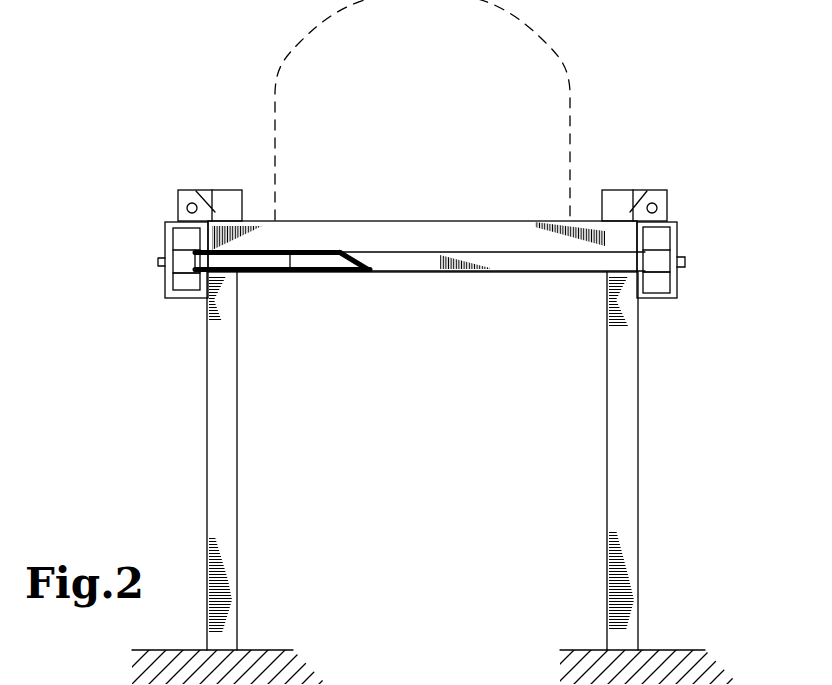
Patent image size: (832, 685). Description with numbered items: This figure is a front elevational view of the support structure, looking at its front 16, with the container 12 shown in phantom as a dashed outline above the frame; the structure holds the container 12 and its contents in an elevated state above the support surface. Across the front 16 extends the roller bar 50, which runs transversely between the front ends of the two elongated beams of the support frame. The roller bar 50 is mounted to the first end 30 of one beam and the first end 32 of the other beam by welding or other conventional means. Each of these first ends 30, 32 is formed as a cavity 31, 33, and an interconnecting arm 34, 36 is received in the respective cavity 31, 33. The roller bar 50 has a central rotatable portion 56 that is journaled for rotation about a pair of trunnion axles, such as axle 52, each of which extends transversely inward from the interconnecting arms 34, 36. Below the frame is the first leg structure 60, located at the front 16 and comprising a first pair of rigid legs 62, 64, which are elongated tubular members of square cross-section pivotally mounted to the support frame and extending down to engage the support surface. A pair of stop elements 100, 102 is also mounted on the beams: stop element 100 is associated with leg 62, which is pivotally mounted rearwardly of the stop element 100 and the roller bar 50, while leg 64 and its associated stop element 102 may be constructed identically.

The container 12 is at (413, 103).
The front 16 is at (385, 418).
The first end 30 is at (130, 225).
The cavity 31 is at (188, 285).
The first end 32 is at (722, 263).
The cavity 33 is at (658, 285).
The interconnecting arm 34 is at (180, 267).
The interconnecting arm 36 is at (660, 262).
The roller bar 50 is at (545, 258).
The axle 52 is at (245, 268).
The central rotatable portion 56 is at (333, 275).
The first leg structure 60 is at (217, 547).
The leg 62 is at (222, 443).
The leg 64 is at (620, 487).
The stop element 100 is at (222, 190).
The stop element 102 is at (605, 190).